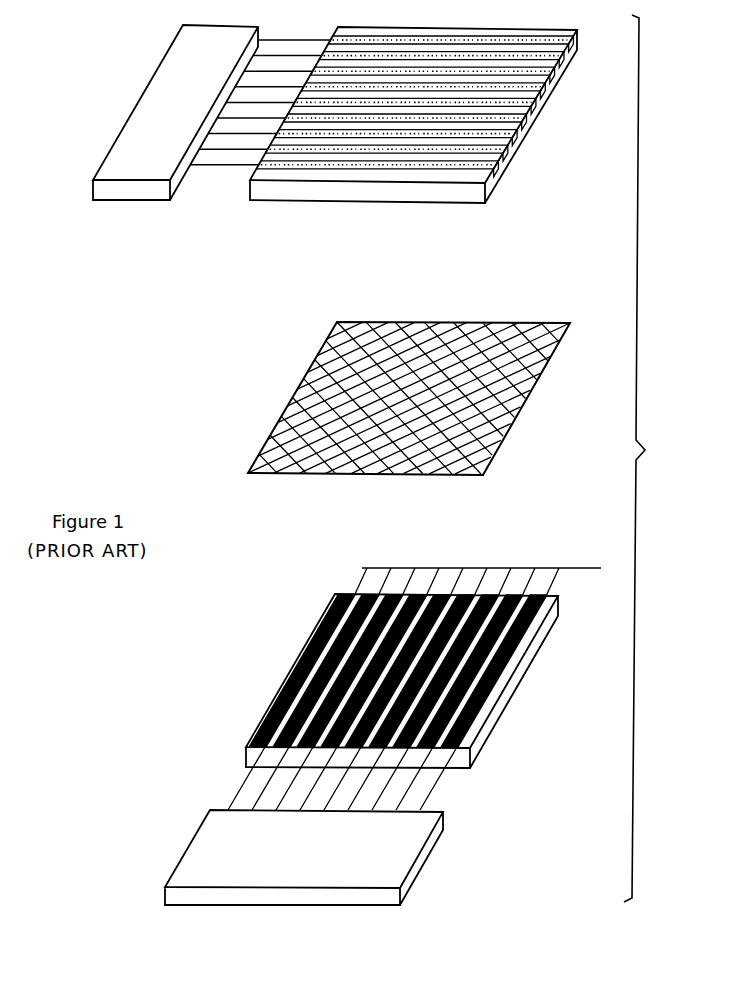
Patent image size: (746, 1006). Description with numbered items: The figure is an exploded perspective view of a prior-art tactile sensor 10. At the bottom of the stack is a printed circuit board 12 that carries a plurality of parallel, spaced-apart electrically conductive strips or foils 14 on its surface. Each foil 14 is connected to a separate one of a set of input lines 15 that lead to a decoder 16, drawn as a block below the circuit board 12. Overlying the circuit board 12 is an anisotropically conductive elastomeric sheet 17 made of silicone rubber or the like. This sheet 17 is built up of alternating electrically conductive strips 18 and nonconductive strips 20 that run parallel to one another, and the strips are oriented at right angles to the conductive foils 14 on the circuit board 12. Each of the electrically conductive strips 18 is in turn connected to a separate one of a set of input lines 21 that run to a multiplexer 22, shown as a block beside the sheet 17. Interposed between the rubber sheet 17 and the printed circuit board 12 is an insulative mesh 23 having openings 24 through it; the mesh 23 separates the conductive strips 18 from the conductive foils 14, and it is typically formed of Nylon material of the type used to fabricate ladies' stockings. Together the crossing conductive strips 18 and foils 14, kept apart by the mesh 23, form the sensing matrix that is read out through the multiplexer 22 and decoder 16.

The tactile sensor 10 is at (647, 458).
The printed circuit board 12 is at (536, 652).
The conductive foils 14 is at (490, 577).
The input lines 15 is at (522, 785).
The decoder 16 is at (397, 853).
The anisotropically conductive elastomeric sheet 17 is at (280, 191).
The electrically conductive strips 18 is at (512, 150).
The nonconductive strips 20 is at (507, 163).
The input lines 21 is at (237, 165).
The multiplexer 22 is at (138, 193).
The insulative mesh 23 is at (488, 463).
The openings 24 is at (297, 423).